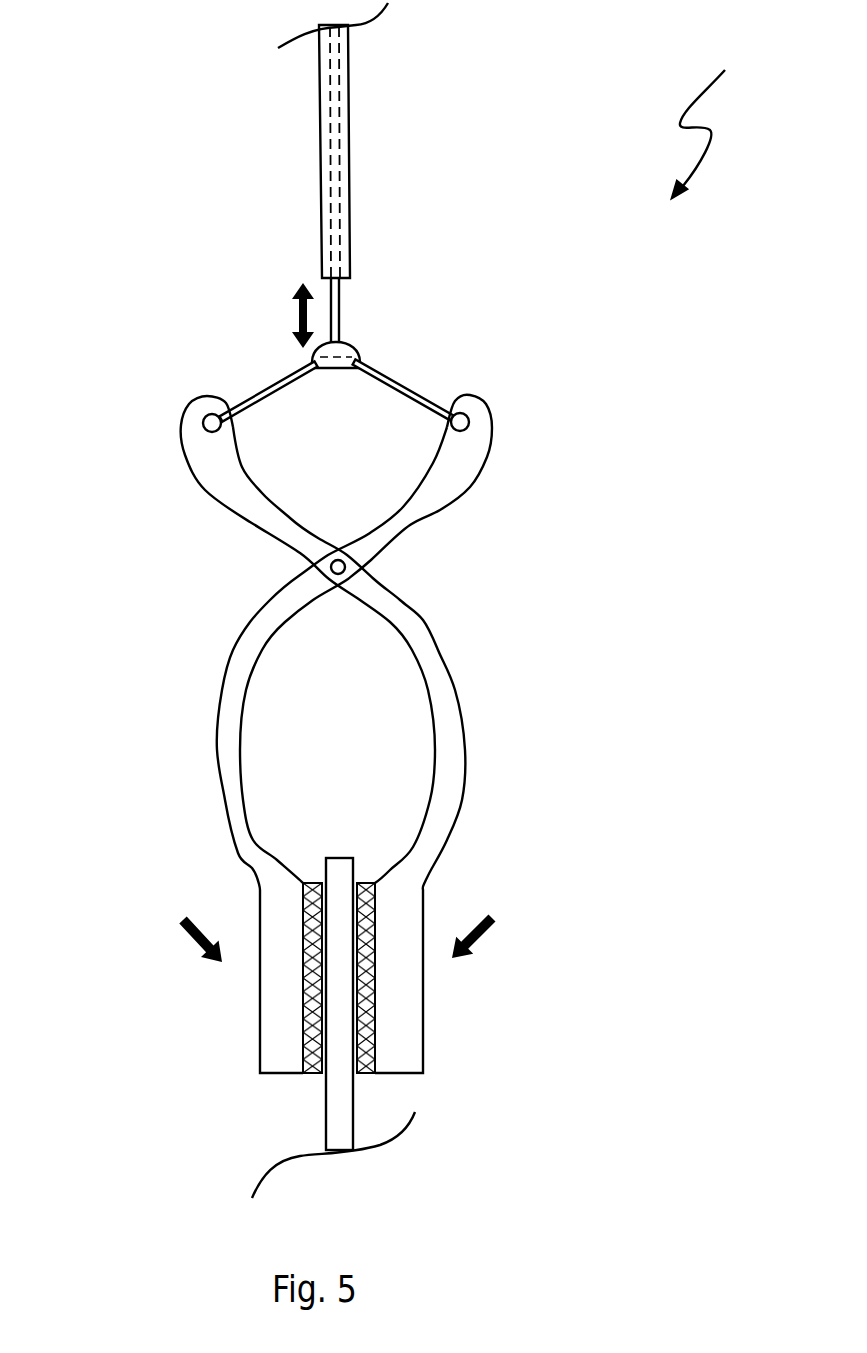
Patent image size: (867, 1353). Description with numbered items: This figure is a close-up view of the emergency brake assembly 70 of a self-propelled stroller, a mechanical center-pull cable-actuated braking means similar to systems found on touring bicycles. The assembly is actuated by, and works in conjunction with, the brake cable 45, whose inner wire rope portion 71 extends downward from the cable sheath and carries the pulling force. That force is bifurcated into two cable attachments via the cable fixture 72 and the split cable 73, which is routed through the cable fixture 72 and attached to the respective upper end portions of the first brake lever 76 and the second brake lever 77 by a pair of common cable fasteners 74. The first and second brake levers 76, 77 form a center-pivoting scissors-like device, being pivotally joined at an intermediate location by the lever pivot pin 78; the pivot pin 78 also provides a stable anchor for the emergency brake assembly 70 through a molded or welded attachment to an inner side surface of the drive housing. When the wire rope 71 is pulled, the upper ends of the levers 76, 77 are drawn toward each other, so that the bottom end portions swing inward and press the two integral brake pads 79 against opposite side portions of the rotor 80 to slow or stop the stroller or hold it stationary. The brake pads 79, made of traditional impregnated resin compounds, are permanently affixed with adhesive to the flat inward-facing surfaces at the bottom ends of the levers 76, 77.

The brake cable 45 is at (347, 108).
The emergency brake assembly 70 is at (707, 122).
The inner wire rope portion 71 is at (340, 307).
The cable fixture 72 is at (355, 348).
The split cable 73 is at (413, 393).
The cable fasteners 74 is at (470, 417).
The first brake lever 76 is at (458, 725).
The second brake lever 77 is at (228, 735).
The lever pivot pin 78 is at (331, 567).
The brake pads 79 is at (357, 1012).
The rotor 80 is at (337, 882).